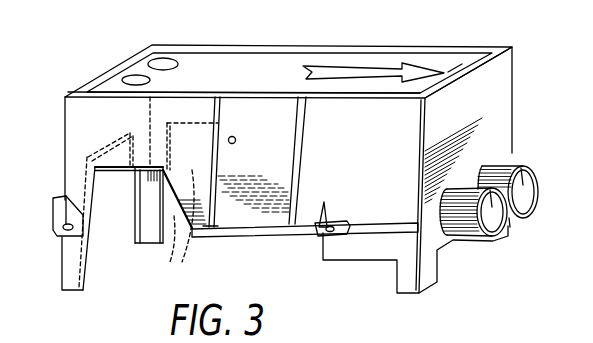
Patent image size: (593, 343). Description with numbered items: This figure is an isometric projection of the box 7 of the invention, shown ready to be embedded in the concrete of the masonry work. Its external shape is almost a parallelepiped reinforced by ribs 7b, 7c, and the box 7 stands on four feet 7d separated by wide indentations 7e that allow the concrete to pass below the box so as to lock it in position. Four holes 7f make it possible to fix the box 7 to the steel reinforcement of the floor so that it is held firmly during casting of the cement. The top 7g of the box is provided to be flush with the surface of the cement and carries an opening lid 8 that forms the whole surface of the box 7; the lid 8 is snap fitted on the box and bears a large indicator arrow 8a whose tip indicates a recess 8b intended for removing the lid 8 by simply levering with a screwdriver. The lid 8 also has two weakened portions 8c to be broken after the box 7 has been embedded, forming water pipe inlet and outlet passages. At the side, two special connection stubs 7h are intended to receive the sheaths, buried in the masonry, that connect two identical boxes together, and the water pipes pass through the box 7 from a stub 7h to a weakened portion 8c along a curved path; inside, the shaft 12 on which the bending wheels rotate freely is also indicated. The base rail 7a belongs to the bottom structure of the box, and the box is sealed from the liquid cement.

The box 7 is at (512, 78).
The bottom rail 7a is at (262, 234).
The rib 7b is at (200, 232).
The rib 7c is at (300, 212).
The foot 7d is at (62, 280).
The indentation 7e is at (103, 186).
The hole 7f is at (60, 238).
The top of the box 7g is at (322, 46).
The connection stub 7h is at (488, 186).
The opening lid 8 is at (455, 62).
The indicator arrow 8a is at (373, 49).
The recess 8b is at (457, 68).
The weakened portion 8c is at (150, 62).
The shaft 12 is at (235, 142).